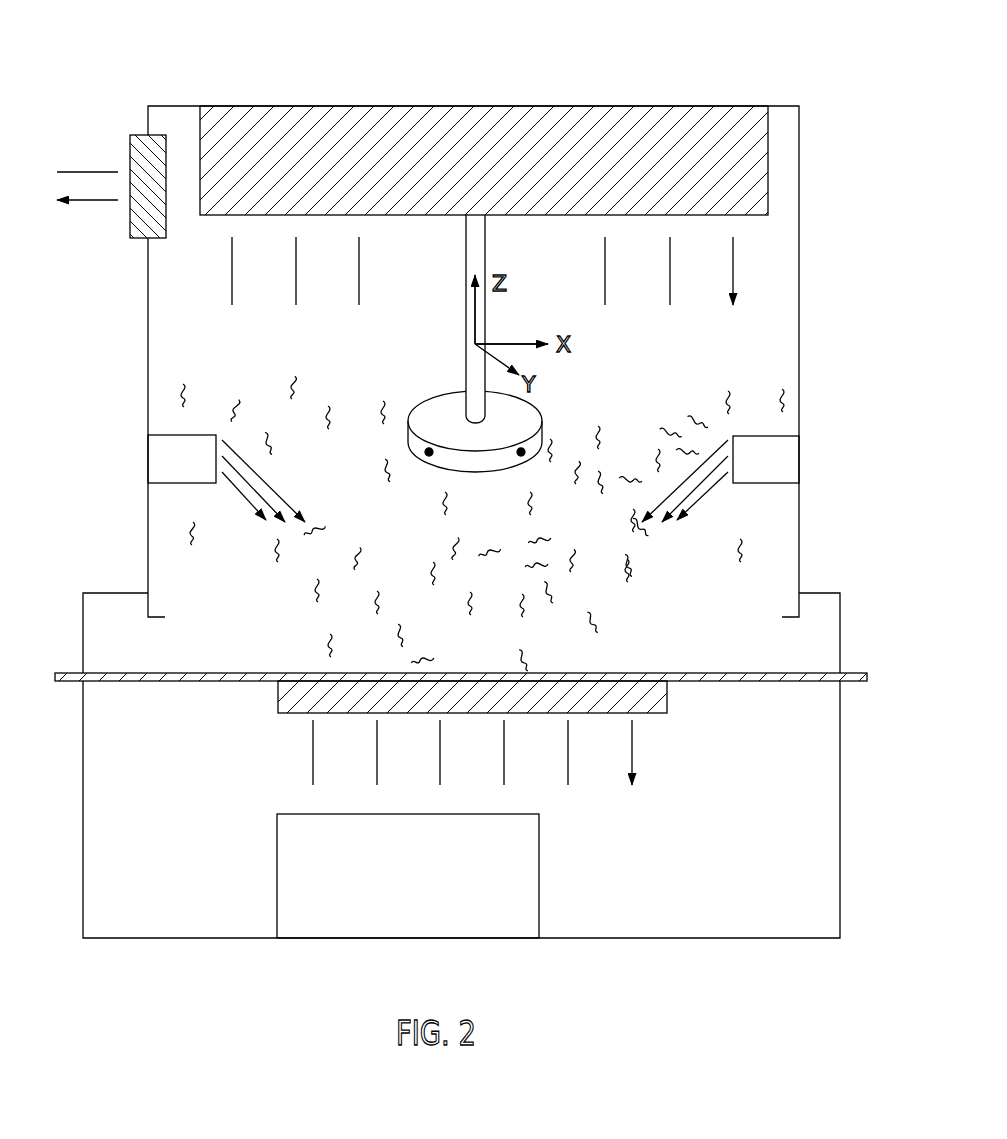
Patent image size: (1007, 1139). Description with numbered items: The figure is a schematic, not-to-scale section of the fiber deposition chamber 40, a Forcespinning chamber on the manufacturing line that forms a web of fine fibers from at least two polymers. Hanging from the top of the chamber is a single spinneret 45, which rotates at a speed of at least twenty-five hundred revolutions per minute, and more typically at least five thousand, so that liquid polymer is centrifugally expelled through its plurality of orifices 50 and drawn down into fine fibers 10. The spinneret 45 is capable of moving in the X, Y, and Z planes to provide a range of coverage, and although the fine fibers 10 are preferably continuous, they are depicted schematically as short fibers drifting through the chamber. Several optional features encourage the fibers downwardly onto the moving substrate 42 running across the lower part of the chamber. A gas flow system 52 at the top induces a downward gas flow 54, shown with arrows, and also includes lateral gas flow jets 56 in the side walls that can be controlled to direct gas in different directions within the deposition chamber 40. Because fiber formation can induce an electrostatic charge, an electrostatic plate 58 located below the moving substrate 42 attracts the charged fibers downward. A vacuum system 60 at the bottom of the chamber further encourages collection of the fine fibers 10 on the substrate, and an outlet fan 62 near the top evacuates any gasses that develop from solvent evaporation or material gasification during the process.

The deposition chamber 40 is at (553, 82).
The gas flow system 52 is at (660, 130).
The outlet fan 62 is at (136, 153).
The downward gas flow 54 is at (788, 259).
The fine fibers 10 is at (642, 422).
The spinneret 45 is at (437, 407).
The orifices 50 is at (429, 452).
The lateral gas flow jets 56 is at (165, 464).
The moving substrate 42 is at (77, 681).
The electrostatic plate 58 is at (662, 698).
The vacuum system 60 is at (394, 893).